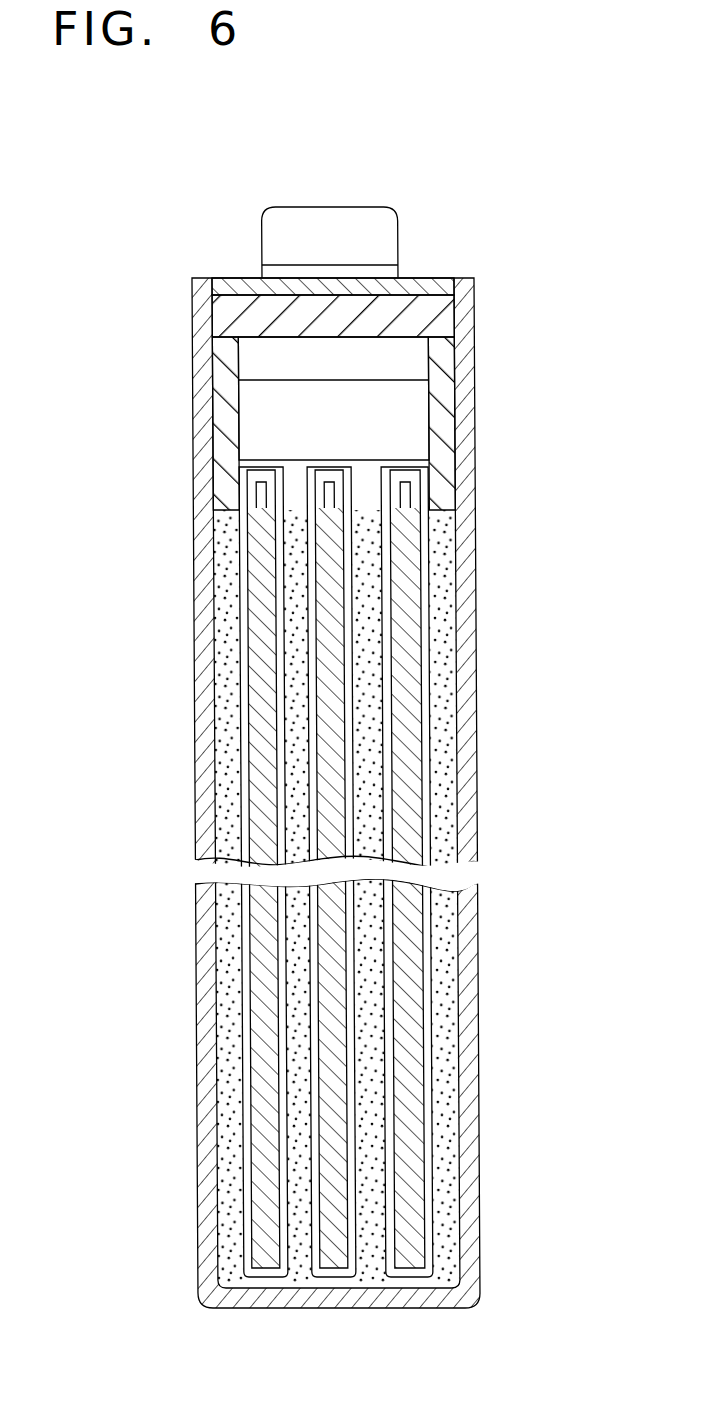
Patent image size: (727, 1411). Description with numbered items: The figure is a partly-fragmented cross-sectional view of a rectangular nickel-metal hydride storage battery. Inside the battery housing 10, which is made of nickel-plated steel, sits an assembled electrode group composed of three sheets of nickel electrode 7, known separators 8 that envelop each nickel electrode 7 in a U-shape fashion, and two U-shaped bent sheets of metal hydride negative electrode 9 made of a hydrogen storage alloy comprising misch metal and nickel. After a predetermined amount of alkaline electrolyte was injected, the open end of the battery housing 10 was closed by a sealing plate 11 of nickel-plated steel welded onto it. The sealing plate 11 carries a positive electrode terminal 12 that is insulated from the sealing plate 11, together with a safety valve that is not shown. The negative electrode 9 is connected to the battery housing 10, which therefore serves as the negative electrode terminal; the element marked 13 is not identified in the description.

The nickel electrode 7 is at (407, 560).
The separator 8 is at (432, 707).
The metal hydride negative electrode 9 is at (442, 618).
The battery housing 10 is at (470, 438).
The sealing plate 11 is at (433, 283).
The positive electrode terminal 12 is at (343, 213).
The insulating liner 13 is at (445, 357).